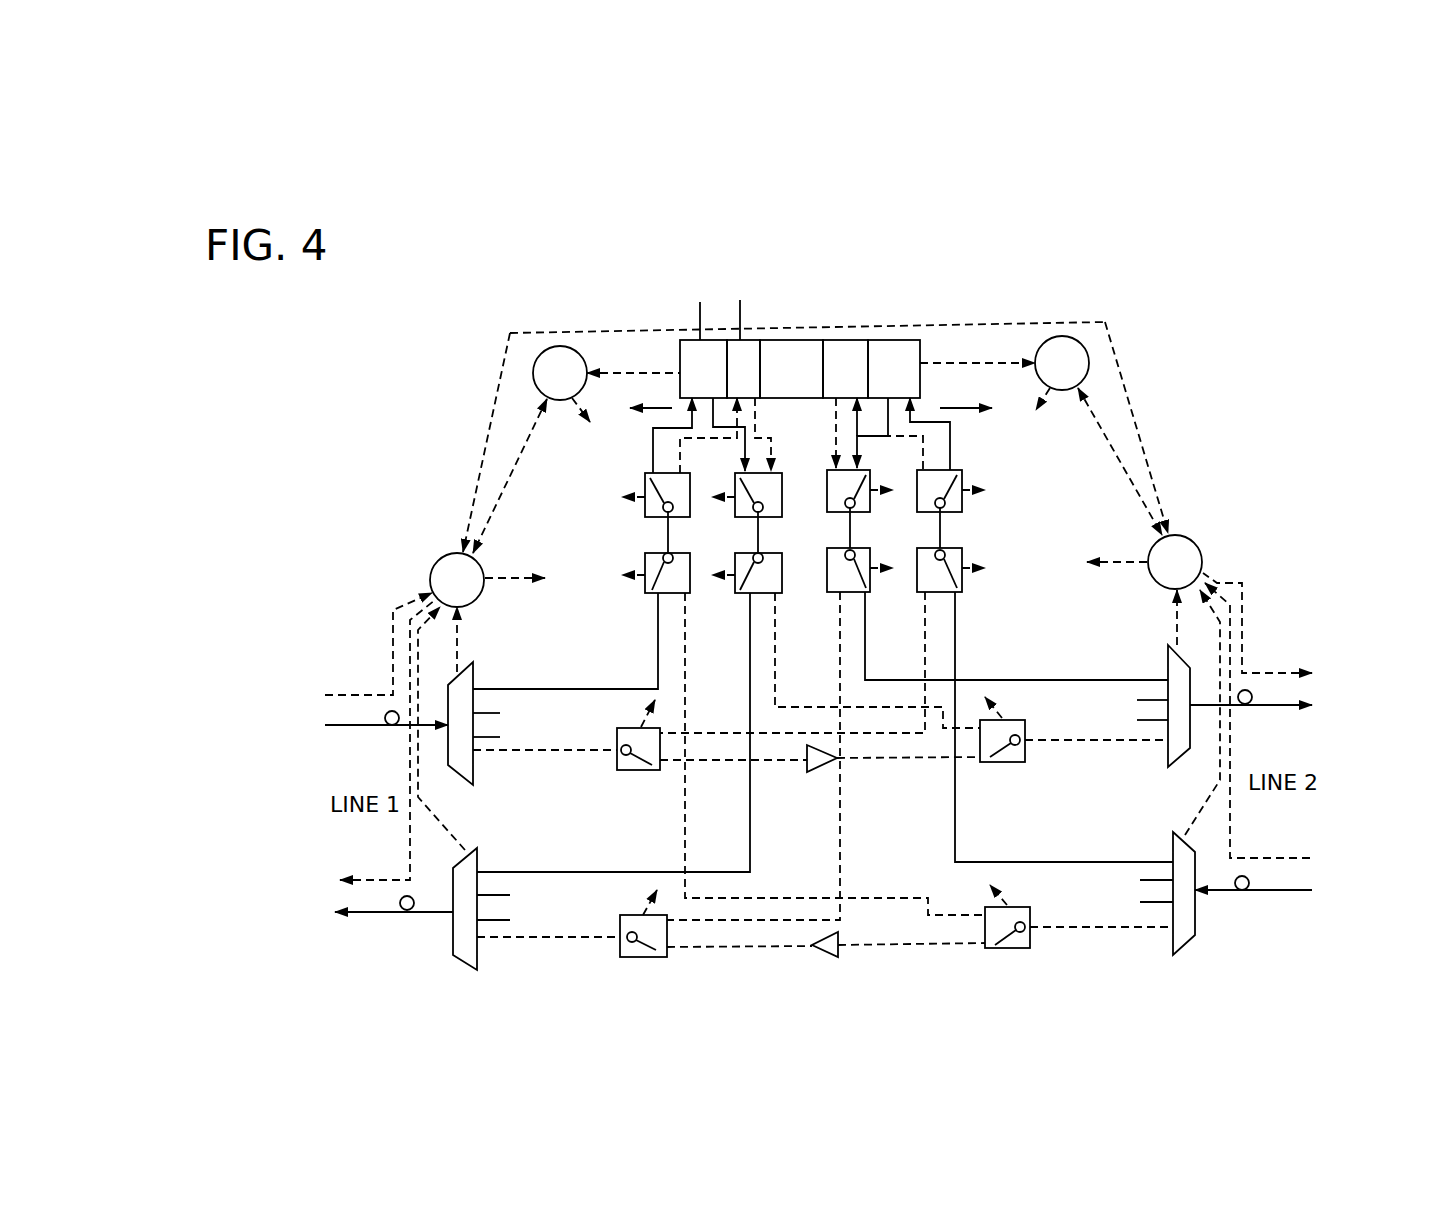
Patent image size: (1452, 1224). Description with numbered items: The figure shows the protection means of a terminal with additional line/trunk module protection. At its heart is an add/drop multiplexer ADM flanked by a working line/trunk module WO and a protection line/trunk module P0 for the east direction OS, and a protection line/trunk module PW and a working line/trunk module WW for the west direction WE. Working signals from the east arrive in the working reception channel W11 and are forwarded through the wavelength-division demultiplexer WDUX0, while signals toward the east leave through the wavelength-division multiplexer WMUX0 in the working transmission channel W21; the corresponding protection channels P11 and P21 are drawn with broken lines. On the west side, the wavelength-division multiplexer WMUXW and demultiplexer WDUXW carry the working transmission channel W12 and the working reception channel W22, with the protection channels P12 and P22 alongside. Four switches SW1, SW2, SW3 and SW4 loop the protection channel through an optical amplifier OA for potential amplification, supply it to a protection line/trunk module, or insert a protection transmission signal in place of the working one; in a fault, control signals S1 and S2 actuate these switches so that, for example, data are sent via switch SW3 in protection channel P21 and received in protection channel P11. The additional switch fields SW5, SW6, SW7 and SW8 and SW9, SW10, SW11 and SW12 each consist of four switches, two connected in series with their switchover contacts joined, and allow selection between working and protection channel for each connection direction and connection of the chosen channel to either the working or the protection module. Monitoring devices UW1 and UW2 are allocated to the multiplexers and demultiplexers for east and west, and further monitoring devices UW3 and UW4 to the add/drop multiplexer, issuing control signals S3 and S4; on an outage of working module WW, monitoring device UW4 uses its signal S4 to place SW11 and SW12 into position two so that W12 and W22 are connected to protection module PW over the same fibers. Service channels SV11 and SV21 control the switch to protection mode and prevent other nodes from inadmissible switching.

The working line/trunk module WO is at (605, 283).
The protection line/trunk module P0 is at (670, 247).
The add/drop multiplexer ADM is at (780, 283).
The protection line/trunk module PW is at (915, 240).
The working line/trunk module WW is at (985, 258).
The monitoring device UW1 is at (405, 545).
The monitoring device UW2 is at (1235, 500).
The monitoring device UW3 is at (455, 373).
The monitoring device UW4 is at (1135, 353).
The switch SW1 is at (636, 771).
The switch SW2 is at (1000, 763).
The switch SW3 is at (640, 958).
The switch SW4 is at (1005, 949).
The switching unit SW5 is at (650, 596).
The switching unit SW6 is at (740, 596).
The switching unit SW7 is at (640, 518).
The switching unit SW8 is at (733, 518).
The switching unit SW9 is at (830, 596).
The switching unit SW10 is at (920, 596).
The switching unit SW11 is at (835, 514).
The switching unit SW12 is at (925, 514).
The optical amplifier OA is at (818, 768).
The wavelength-division demultiplexer WDUX0 is at (460, 778).
The wavelength-division multiplexer WMUX0 is at (465, 960).
The wavelength-division multiplexer WMUXW is at (1275, 607).
The wavelength-division demultiplexer WDUXW is at (1200, 925).
The working reception channel W11 is at (550, 688).
The working transmission channel W12 is at (1072, 680).
The working transmission channel W21 is at (554, 872).
The working reception channel W22 is at (1076, 862).
The protection channel P11 is at (556, 748).
The protection channel P12 is at (1071, 735).
The protection channel P21 is at (561, 937).
The protection channel P22 is at (1076, 922).
The service channel SV11 is at (377, 644).
The service channel SV21 is at (382, 740).
The control signal S1 is at (516, 563).
The control signal S2 is at (1114, 548).
The control signal S3 is at (594, 407).
The control signal S4 is at (1028, 394).
The east transmission direction OS is at (651, 394).
The west transmission direction WE is at (966, 393).